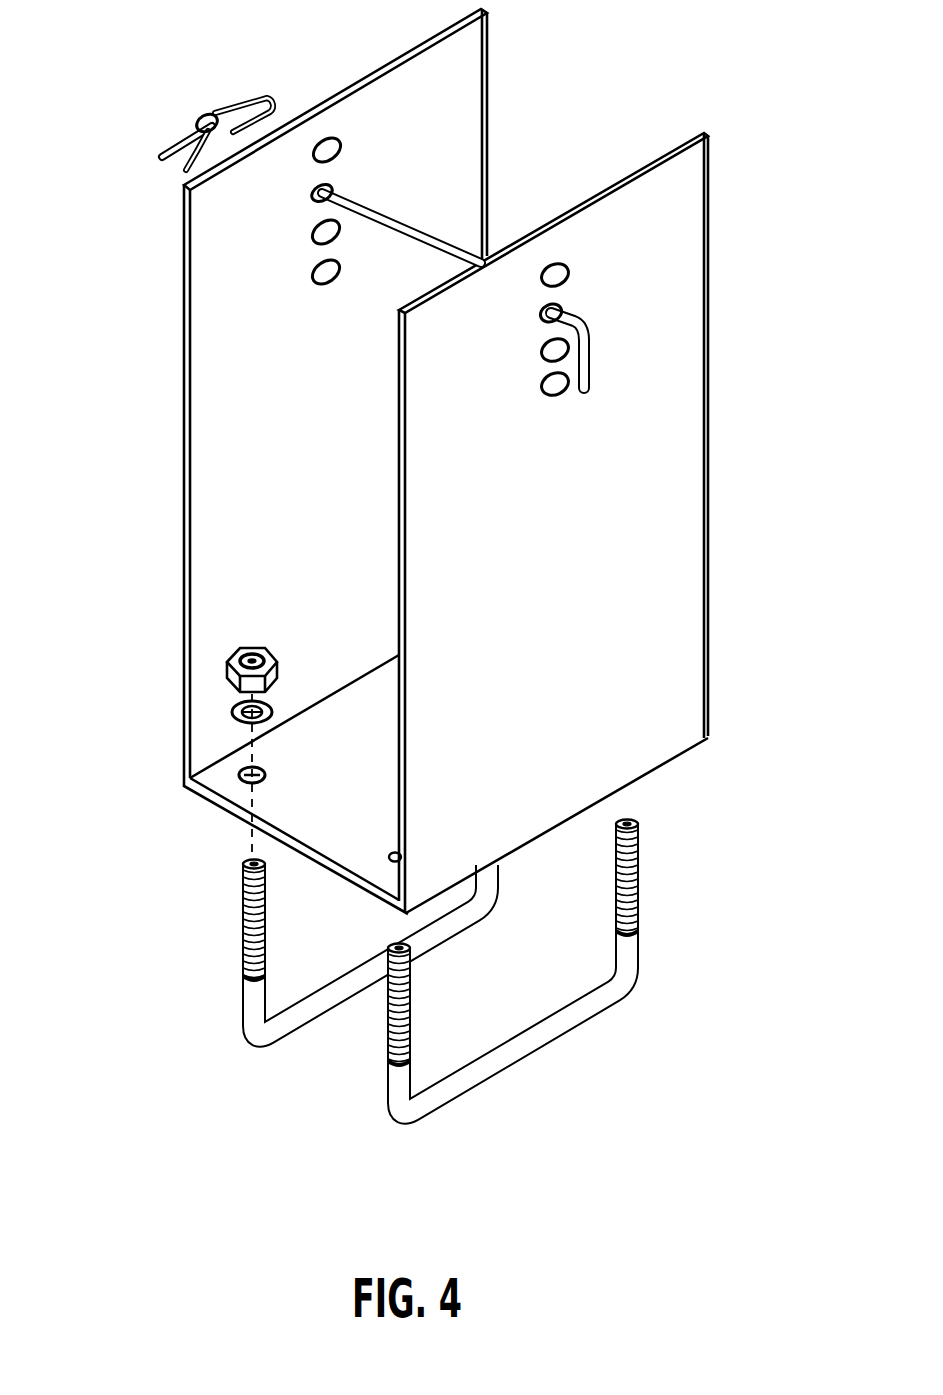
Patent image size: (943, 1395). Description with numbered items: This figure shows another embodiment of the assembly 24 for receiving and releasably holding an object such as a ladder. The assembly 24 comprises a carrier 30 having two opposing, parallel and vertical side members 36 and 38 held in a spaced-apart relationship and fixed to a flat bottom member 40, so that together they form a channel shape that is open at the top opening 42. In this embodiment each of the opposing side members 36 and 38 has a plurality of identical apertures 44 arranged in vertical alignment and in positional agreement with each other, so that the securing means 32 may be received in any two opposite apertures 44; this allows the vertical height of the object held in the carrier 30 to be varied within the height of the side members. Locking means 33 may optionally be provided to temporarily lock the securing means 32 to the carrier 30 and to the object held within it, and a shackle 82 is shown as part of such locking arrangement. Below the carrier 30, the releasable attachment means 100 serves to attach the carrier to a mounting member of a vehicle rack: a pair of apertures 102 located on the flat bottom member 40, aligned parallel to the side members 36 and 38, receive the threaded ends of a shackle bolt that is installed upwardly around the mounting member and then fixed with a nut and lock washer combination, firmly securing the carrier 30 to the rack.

The assembly 24 is at (761, 331).
The carrier 30 is at (555, 598).
The securing means 32 is at (337, 188).
The locking means 33 is at (173, 143).
The side member 36 is at (180, 338).
The side member 38 is at (712, 499).
The flat bottom member 40 is at (236, 812).
The top opening 42 is at (518, 113).
The apertures 44 is at (312, 194).
The shackle 82 is at (380, 1122).
The releasable attachment means 100 is at (232, 890).
The apertures 102 is at (641, 957).